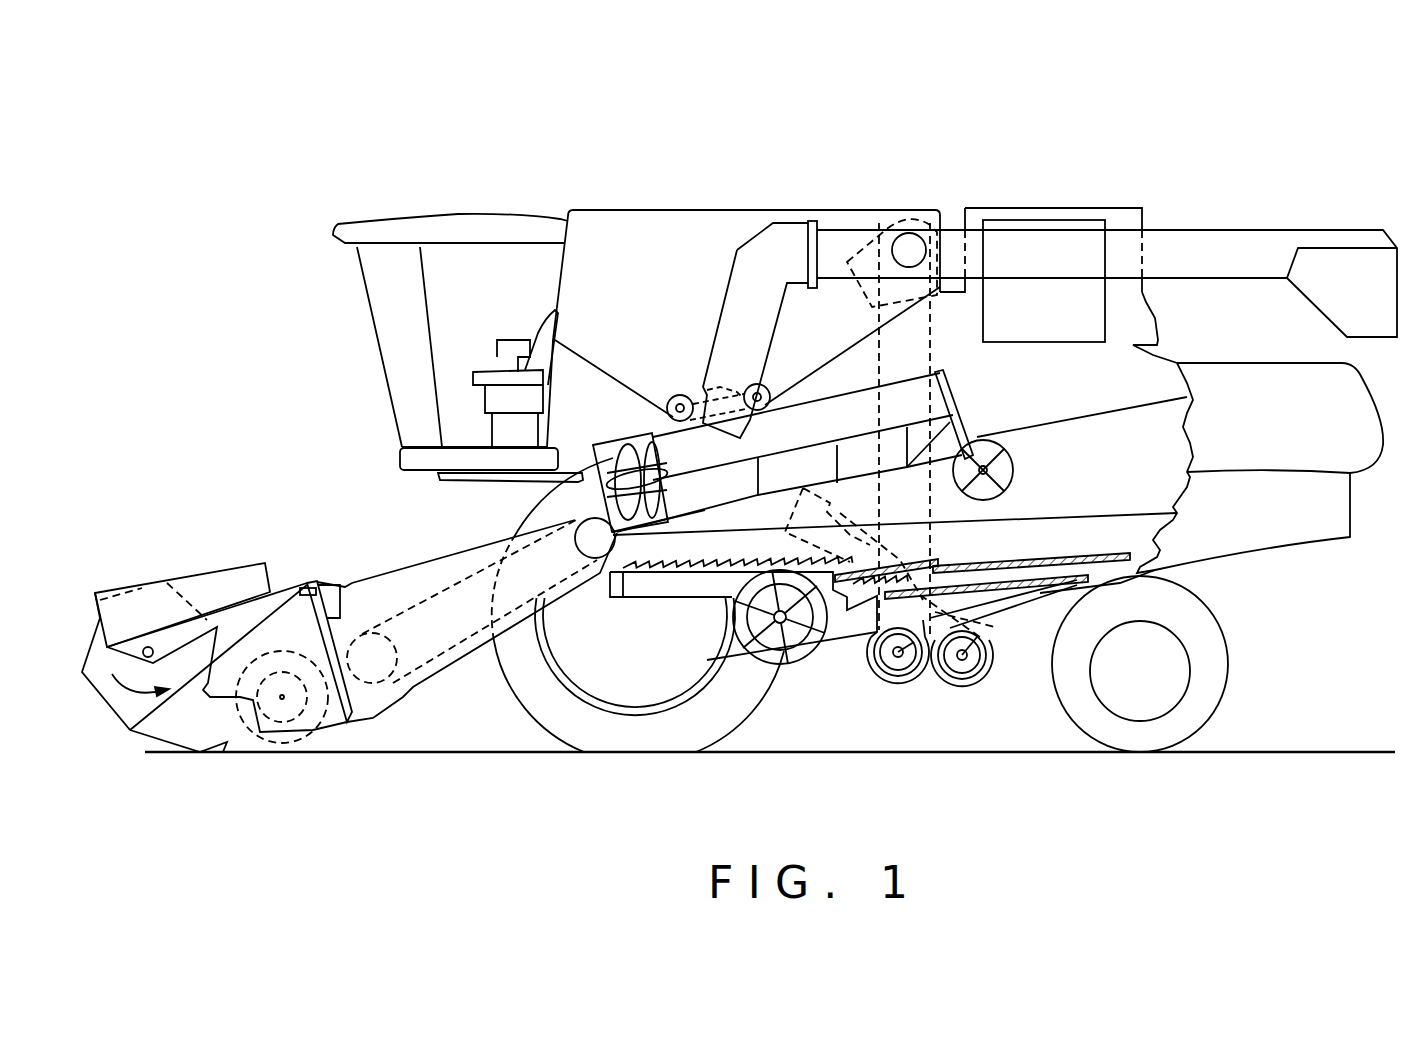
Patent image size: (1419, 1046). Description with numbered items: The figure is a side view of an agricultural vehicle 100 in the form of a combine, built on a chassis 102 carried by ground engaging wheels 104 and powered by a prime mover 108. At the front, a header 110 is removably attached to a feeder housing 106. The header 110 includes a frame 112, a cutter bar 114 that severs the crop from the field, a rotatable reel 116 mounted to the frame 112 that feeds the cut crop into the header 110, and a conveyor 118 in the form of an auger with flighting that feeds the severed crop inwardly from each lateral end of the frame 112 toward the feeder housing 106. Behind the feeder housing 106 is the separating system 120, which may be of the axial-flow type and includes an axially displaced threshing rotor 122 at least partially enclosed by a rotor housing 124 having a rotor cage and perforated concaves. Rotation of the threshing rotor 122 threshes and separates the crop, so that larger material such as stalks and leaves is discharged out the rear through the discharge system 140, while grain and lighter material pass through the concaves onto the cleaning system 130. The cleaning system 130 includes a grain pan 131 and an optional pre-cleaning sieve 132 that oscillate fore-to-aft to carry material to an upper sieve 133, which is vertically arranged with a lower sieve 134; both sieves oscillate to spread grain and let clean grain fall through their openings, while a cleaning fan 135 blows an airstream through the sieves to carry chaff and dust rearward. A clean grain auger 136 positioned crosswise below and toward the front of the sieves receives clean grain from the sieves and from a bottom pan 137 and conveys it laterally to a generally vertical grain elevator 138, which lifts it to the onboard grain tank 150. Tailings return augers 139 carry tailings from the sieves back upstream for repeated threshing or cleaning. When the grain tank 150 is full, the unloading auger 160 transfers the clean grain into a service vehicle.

The agricultural vehicle 100 is at (440, 185).
The chassis 102 is at (1157, 570).
The ground engaging wheels 104 is at (383, 340).
The feeder housing 106 is at (397, 573).
The prime mover 108 is at (1045, 222).
The header 110 is at (190, 562).
The frame 112 is at (340, 733).
The cutter bar 114 is at (145, 738).
The rotatable reel 116 is at (83, 640).
The conveyor 118 is at (282, 720).
The separating system 120 is at (518, 507).
The threshing rotor 122 is at (625, 455).
The rotor housing 124 is at (824, 415).
The cleaning system 130 is at (854, 680).
The grain pan 131 is at (623, 597).
The pre-cleaning sieve 132 is at (947, 552).
The upper sieve 133 is at (1063, 558).
The lower sieve 134 is at (1017, 597).
The cleaning fan 135 is at (790, 655).
The clean grain auger 136 is at (895, 680).
The bottom pan 137 is at (1060, 593).
The grain elevator 138 is at (935, 345).
The tailings return auger 139 is at (843, 522).
The discharge system 140 is at (1324, 564).
The grain tank 150 is at (624, 226).
The unloading auger 160 is at (1233, 240).